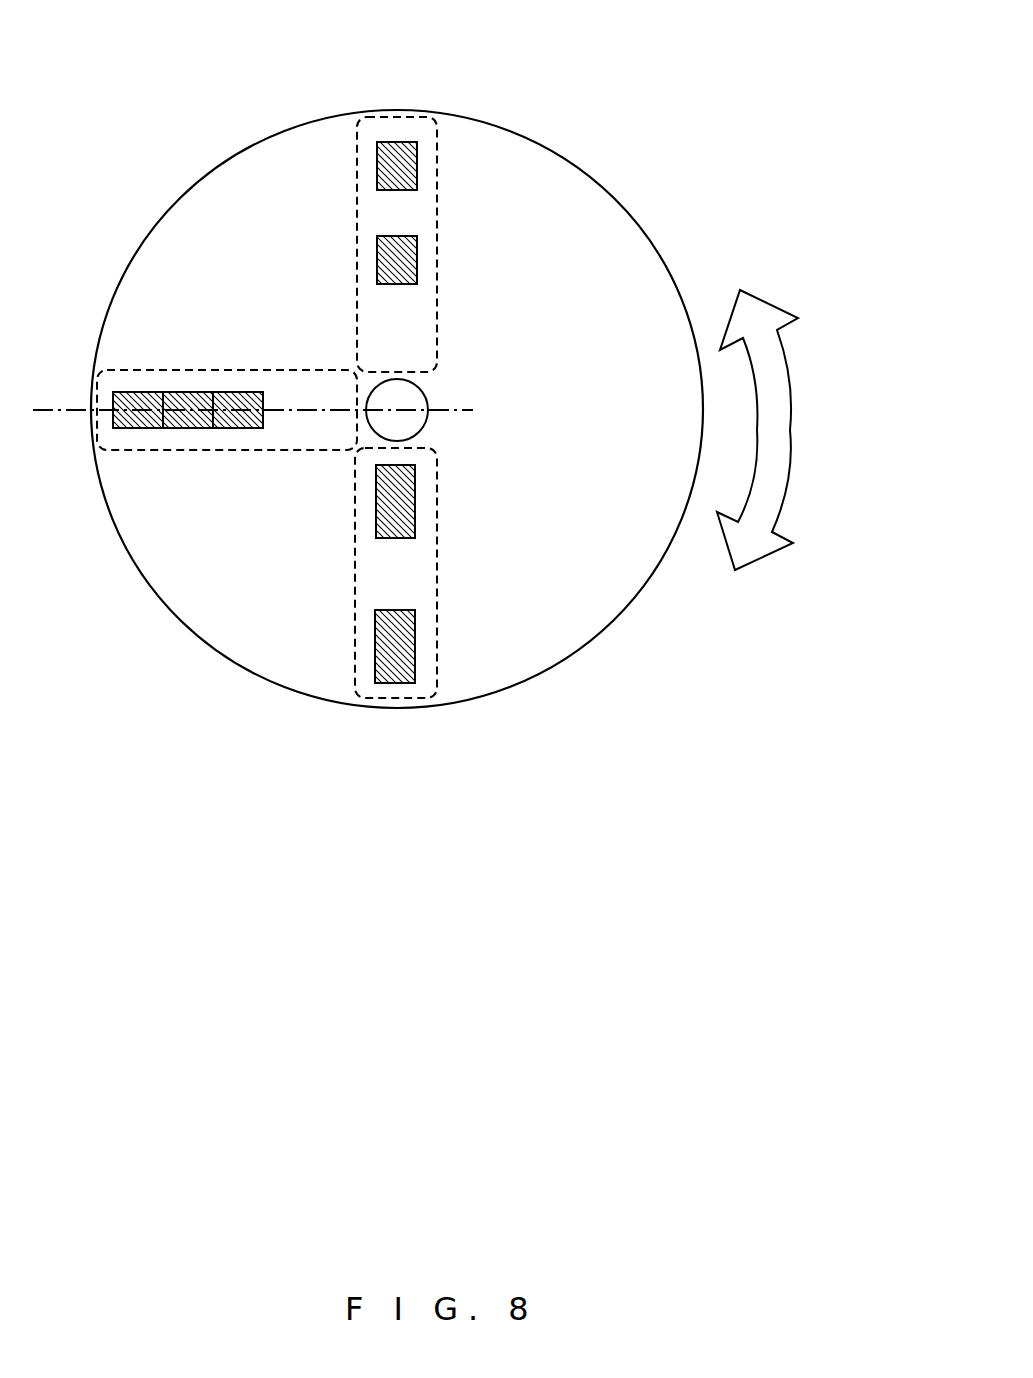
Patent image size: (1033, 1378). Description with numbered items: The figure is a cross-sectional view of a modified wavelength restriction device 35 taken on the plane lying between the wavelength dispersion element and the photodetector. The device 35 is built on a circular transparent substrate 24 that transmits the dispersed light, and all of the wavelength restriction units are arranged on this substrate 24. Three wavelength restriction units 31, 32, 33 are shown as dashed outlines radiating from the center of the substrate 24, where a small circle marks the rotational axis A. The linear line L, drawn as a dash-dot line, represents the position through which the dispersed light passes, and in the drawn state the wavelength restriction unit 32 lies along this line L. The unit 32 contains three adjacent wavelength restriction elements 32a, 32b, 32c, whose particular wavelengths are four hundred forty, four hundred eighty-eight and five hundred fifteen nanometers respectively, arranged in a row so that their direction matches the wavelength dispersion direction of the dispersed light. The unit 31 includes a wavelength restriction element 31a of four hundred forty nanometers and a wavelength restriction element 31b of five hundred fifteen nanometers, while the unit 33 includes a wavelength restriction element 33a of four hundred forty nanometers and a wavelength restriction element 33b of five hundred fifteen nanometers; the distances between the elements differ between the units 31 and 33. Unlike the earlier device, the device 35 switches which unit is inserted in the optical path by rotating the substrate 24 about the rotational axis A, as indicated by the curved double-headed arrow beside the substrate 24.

The transparent substrate 24 is at (587, 207).
The rotational axis A is at (403, 398).
The linear line L is at (56, 400).
The wavelength restriction unit 31 is at (438, 205).
The wavelength restriction element 31a is at (395, 165).
The wavelength restriction element 31b is at (395, 263).
The wavelength restriction unit 32 is at (160, 450).
The wavelength restriction element 32a is at (137, 398).
The wavelength restriction element 32b is at (188, 398).
The wavelength restriction element 32c is at (238, 398).
The wavelength restriction unit 33 is at (437, 565).
The wavelength restriction element 33a is at (395, 645).
The wavelength restriction element 33b is at (395, 505).
The wavelength restriction device 35 is at (715, 60).